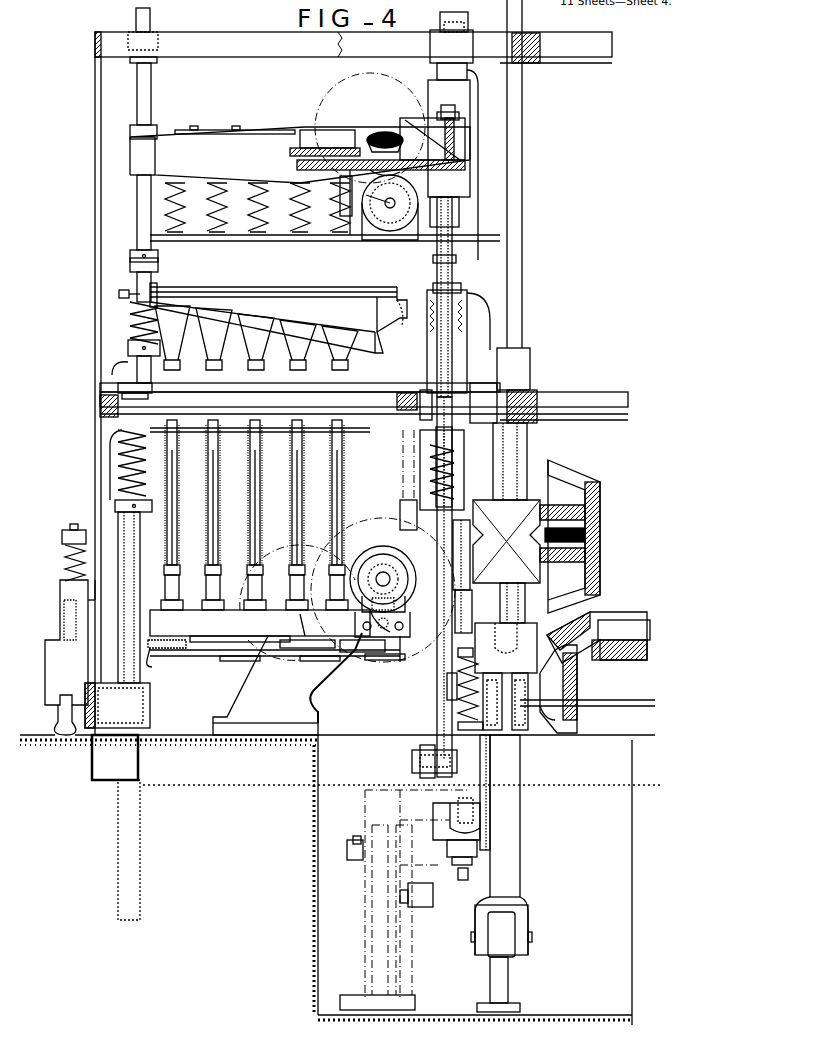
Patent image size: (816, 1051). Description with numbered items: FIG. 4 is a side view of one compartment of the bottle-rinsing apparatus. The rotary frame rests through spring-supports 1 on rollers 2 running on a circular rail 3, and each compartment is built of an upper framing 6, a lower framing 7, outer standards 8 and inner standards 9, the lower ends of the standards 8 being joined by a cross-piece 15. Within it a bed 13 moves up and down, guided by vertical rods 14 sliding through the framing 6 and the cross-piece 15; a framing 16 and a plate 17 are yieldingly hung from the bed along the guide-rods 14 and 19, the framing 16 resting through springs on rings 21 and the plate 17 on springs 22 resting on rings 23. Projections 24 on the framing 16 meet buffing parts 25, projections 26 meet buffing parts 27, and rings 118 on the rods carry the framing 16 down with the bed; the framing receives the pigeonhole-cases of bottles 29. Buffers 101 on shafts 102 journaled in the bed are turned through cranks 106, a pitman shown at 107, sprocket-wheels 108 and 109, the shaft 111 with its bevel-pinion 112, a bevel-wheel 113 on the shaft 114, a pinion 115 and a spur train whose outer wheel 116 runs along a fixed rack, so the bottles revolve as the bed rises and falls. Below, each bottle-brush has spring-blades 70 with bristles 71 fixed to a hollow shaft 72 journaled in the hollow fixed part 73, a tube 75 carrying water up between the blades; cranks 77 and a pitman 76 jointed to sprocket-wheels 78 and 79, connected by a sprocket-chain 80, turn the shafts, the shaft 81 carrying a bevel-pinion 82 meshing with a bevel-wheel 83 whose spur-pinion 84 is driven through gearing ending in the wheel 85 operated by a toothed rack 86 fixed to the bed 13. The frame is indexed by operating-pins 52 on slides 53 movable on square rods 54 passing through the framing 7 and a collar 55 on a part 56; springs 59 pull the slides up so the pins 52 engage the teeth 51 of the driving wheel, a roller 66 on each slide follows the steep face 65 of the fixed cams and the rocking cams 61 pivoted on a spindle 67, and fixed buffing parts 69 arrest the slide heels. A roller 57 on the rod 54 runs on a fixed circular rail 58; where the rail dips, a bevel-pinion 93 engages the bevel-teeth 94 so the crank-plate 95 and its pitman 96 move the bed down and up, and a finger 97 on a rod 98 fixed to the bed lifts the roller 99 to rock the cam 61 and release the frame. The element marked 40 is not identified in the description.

The spring-supports 1 is at (62, 566).
The rollers 2 is at (58, 690).
The circular rail 3 is at (55, 718).
The upper framing 6 is at (240, 44).
The lower framing 7 is at (356, 392).
The standards 8 is at (95, 240).
The standards 9 is at (478, 238).
The bed 13 is at (166, 143).
The vertical rods 14 is at (150, 20).
The cross-piece 15 is at (110, 710).
The framing 16 is at (378, 298).
The plate 17 is at (186, 392).
The guide-rod 19 is at (448, 107).
The rings 21 is at (127, 369).
The springs 22 is at (118, 468).
The rings 23 is at (122, 508).
The projections 24 is at (124, 298).
The buffing parts 25 is at (470, 296).
The projections 26 is at (128, 336).
The buffing parts 27 is at (485, 397).
The pigeonhole-cases of bottles 29 is at (325, 271).
The block 40 is at (447, 848).
The teeth 51 is at (577, 686).
The operating-pins 52 is at (560, 712).
The slides 53 is at (495, 768).
The square rods 54 is at (530, 448).
The collar 55 is at (490, 735).
The part 56 is at (650, 632).
The roller 57 is at (500, 935).
The fixed circular rail 58 is at (500, 980).
The springs 59 is at (458, 700).
The cams 61 is at (372, 805).
The steep face 65 is at (370, 940).
The roller 66 is at (462, 800).
The fixed spindle 67 is at (348, 850).
The fixed buffing parts 69 is at (463, 880).
The spring-blades 70 is at (212, 440).
The bristles 71 is at (210, 470).
The hollow shaft 72 is at (216, 592).
The fixed part 73 is at (176, 620).
The tube 75 is at (214, 534).
The pitman 76 is at (212, 658).
The cranks 77 is at (238, 660).
The sprocket-wheel 78 is at (164, 657).
The sprocket-wheel 79 is at (398, 662).
The sprocket-chain 80 is at (300, 660).
The shaft 81 is at (378, 660).
The bevel-pinion 82 is at (398, 602).
The bevel-wheel 83 is at (398, 582).
The spur-pinion 84 is at (405, 562).
The wheel 85 is at (402, 626).
The toothed rack 86 is at (405, 500).
The bevel-pinion 93 is at (585, 490).
The bevel-teeth 94 is at (590, 628).
The crank-plate 95 is at (462, 485).
The pitman 96 is at (455, 455).
The finger 97 is at (412, 766).
The rod 98 is at (430, 653).
The roller 99 is at (416, 907).
The buffers 101 is at (228, 226).
The shafts 102 is at (226, 198).
The cranks 106 is at (320, 130).
The stud 107 is at (214, 131).
The sprocket-wheel 108 is at (180, 136).
The sprocket-wheel 109 is at (428, 142).
The shaft 111 is at (390, 132).
The bevel-pinion 112 is at (405, 172).
The bevel-wheel 113 is at (400, 228).
The shaft 114 is at (390, 203).
The pinion 115 is at (356, 220).
The wheel 116 is at (378, 104).
The rings 118 is at (134, 258).